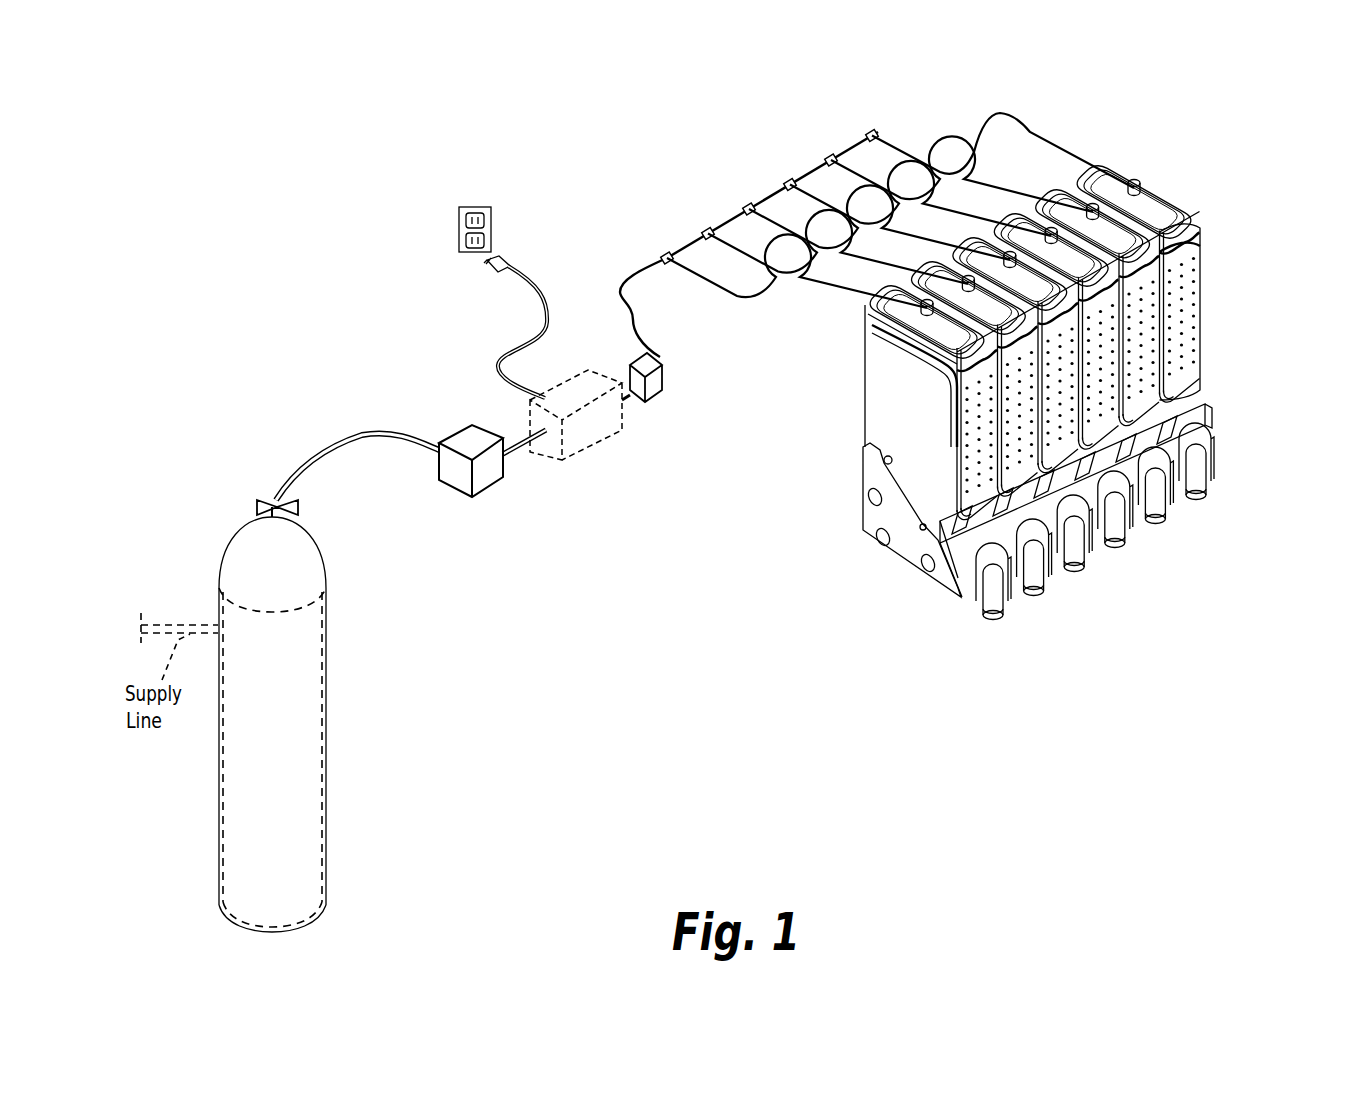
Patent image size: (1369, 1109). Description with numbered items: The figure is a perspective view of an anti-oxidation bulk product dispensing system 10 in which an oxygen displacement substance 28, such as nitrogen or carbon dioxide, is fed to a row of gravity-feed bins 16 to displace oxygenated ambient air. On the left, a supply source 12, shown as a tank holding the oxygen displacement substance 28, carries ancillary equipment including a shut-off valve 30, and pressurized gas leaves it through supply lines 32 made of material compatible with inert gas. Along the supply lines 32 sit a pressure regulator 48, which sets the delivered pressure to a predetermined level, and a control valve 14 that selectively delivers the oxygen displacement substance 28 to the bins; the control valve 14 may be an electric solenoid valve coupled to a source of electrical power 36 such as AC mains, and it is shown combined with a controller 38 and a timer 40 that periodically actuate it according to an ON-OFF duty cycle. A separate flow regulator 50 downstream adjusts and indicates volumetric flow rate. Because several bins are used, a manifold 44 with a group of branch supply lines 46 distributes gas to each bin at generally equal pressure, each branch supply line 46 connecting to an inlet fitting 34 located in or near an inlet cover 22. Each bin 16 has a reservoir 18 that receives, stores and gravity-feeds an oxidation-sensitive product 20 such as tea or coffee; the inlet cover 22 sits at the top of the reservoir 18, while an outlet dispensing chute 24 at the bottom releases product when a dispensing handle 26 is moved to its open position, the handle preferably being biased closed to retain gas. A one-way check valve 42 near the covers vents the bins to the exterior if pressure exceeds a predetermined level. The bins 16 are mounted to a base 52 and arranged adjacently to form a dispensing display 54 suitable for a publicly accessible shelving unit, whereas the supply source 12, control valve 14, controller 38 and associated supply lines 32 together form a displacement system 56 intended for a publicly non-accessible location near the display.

The anti-oxidation bulk product dispensing system 10 is at (324, 238).
The supply source 12 is at (330, 645).
The control valve 14 is at (595, 440).
The gravity-feed bin 16 is at (1203, 380).
The reservoir 18 is at (1205, 308).
The oxidation-sensitive product 20 is at (1190, 292).
The inlet cover 22 is at (1190, 212).
The outlet dispensing chute 24 is at (1210, 510).
The dispensing handle 26 is at (1210, 430).
The oxygen displacement substance 28 is at (322, 803).
The shut-off valve 30 is at (257, 507).
The supply line 32 is at (312, 460).
The inlet fitting 34 is at (1145, 190).
The source of electrical power 36 is at (459, 217).
The controller 38 is at (595, 440).
The timer 40 is at (592, 456).
The check valve 42 is at (868, 300).
The manifold 44 is at (1088, 142).
The branch supply line 46 is at (1028, 135).
The pressure regulator 48 is at (488, 496).
The flow regulator 50 is at (655, 397).
The base 52 is at (902, 572).
The dispensing display 54 is at (827, 567).
The displacement system 56 is at (578, 614).